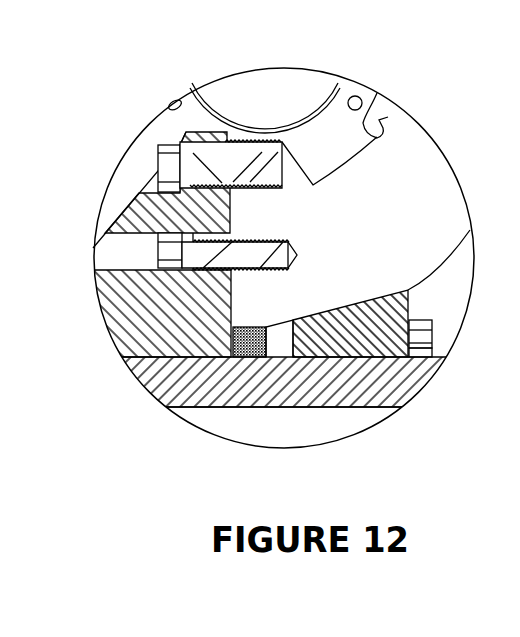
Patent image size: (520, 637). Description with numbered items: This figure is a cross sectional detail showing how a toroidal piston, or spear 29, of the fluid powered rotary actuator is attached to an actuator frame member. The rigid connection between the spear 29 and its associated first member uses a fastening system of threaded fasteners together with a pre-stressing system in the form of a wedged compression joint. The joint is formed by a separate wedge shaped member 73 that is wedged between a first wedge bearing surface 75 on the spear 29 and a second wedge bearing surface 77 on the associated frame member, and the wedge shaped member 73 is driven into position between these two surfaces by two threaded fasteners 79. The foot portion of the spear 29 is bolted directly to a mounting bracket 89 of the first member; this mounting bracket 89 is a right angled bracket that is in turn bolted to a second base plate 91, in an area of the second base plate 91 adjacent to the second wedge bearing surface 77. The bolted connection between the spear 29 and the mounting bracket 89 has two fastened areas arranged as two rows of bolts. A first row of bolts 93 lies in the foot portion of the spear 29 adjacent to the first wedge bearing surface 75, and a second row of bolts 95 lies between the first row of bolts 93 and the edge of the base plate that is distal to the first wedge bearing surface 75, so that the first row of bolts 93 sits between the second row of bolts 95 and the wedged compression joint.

The spear 29 is at (377, 93).
The second row of bolts 95 is at (153, 163).
The mounting bracket 89 is at (123, 212).
The first row of bolts 93 is at (153, 258).
The first wedge bearing surface 75 is at (352, 304).
The wedge shaped member 73 is at (409, 292).
The threaded fasteners 79 is at (433, 346).
The second wedge bearing surface 77 is at (408, 393).
The second base plate 91 is at (190, 410).